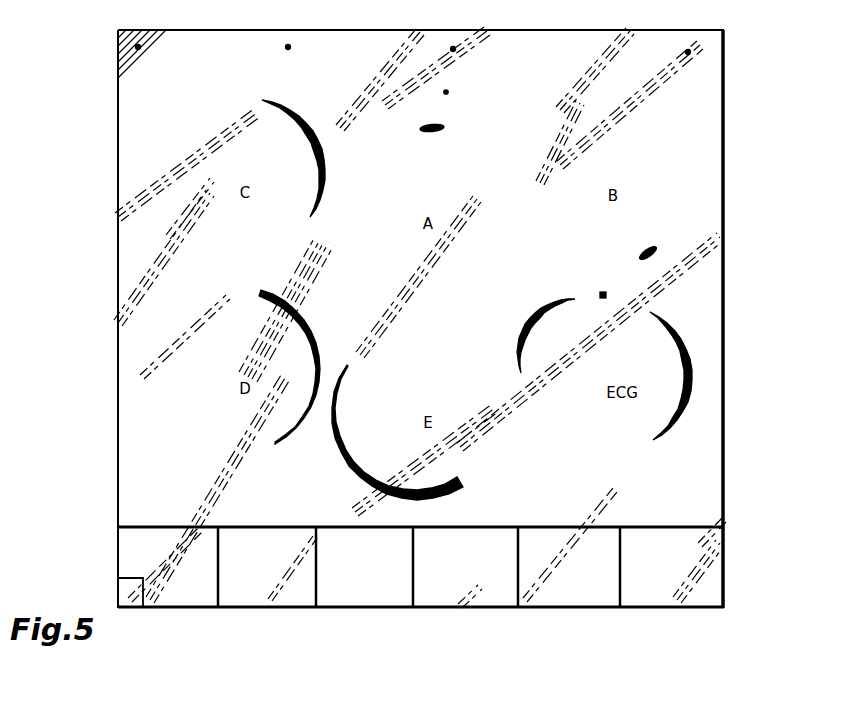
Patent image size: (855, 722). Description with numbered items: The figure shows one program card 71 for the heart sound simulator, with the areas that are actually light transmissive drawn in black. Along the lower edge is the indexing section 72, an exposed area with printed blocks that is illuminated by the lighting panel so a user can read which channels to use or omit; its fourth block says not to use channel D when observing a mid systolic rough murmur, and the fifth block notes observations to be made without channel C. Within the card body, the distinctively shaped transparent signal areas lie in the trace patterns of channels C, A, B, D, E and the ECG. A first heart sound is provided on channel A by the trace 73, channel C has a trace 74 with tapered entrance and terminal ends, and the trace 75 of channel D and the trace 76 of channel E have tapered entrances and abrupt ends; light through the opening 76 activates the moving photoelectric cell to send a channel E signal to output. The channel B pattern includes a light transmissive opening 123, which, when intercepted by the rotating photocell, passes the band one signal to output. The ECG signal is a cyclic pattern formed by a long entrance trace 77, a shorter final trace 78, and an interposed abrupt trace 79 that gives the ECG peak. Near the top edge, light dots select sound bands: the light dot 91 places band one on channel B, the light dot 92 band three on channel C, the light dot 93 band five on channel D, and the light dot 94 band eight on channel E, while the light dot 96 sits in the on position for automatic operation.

The program card 71 is at (698, 243).
The indexing section 72 is at (728, 532).
The trace 73 is at (432, 131).
The trace 74 is at (313, 137).
The trace 75 is at (298, 312).
The trace 76 is at (350, 465).
The long entrance trace 77 is at (687, 353).
The final trace 78 is at (528, 333).
The abrupt trace 79 is at (603, 293).
The light dot 91 is at (138, 47).
The light dot 92 is at (288, 46).
The light dot 93 is at (453, 48).
The light dot 94 is at (446, 92).
The light dot 96 is at (688, 52).
The light transmissive opening 123 is at (645, 250).